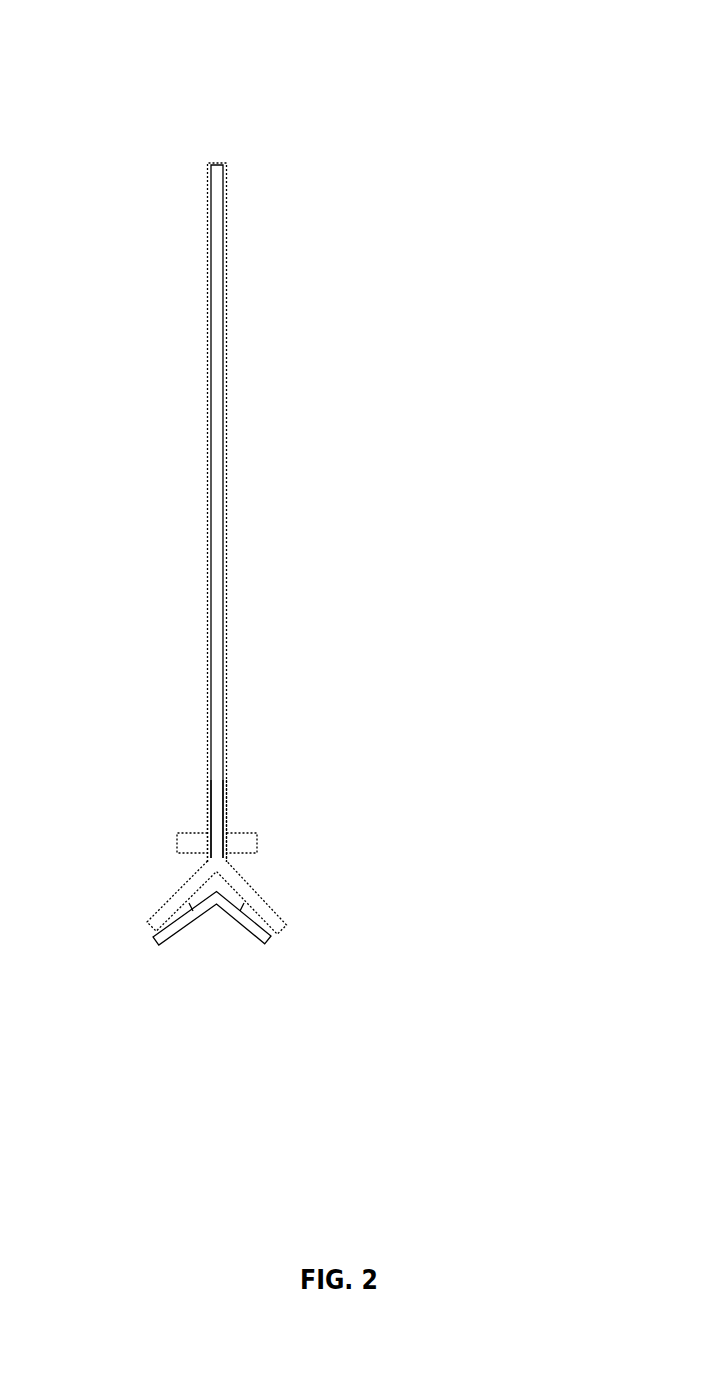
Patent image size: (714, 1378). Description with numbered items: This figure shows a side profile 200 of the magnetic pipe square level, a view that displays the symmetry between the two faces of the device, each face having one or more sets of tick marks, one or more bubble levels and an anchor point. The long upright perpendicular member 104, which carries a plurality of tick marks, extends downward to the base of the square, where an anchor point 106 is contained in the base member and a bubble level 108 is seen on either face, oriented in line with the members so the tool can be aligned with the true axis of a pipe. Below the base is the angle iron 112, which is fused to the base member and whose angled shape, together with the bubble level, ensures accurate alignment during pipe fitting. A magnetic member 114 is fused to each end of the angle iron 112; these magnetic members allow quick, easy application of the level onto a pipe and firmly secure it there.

The side profile 200 is at (219, 59).
The perpendicular member 104 is at (215, 413).
The anchor point 106 is at (185, 841).
The bubble level 108 is at (208, 793).
The angle iron 112 is at (192, 880).
The magnetic member 114 is at (162, 927).